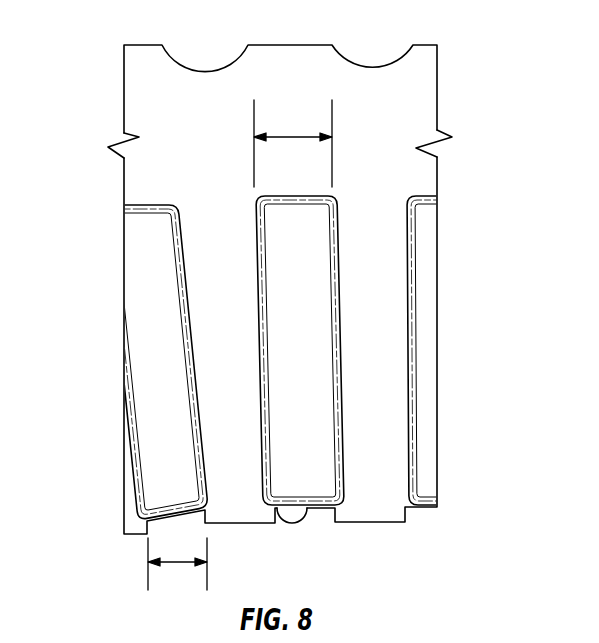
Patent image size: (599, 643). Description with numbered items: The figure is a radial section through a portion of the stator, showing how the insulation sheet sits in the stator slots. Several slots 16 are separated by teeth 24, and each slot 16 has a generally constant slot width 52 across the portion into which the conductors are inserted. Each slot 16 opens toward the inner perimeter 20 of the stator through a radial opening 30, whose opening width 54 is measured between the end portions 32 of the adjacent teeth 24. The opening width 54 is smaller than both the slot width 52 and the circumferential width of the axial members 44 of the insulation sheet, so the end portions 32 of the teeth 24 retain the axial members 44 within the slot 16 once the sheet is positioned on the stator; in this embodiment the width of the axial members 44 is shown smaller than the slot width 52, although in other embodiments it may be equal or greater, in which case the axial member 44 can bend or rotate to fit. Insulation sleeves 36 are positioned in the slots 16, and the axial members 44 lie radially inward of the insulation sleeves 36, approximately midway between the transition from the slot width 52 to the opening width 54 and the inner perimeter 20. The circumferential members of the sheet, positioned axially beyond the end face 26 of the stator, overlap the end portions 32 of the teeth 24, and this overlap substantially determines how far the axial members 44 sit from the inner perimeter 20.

The slot 16 is at (315, 443).
The inner perimeter 20 is at (383, 522).
The tooth 24 is at (229, 314).
The end face 26 is at (410, 102).
The radial opening 30 is at (170, 526).
The end portion 32 is at (370, 507).
The insulation sleeve 36 is at (326, 382).
The axial member 44 is at (275, 517).
The slot width 52 is at (254, 137).
The opening width 54 is at (148, 568).